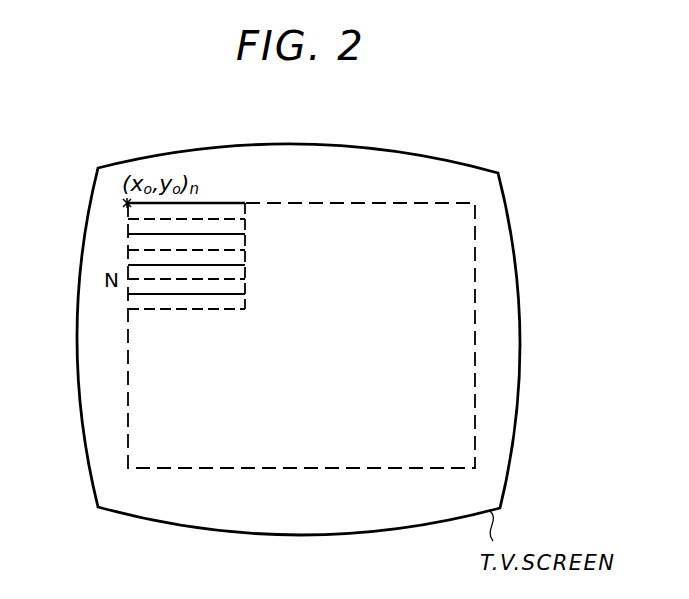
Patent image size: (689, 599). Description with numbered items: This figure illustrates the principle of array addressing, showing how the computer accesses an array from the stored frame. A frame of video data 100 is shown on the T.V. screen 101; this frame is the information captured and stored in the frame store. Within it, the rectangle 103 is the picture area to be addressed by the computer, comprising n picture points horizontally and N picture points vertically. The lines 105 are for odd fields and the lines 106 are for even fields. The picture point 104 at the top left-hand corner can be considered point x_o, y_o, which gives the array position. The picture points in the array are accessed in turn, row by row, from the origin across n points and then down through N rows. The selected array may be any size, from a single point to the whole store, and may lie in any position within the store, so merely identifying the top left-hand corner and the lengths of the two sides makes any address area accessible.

The frame of video data 100 is at (476, 227).
The T.V. screen 101 is at (518, 292).
The rectangle 103 is at (230, 256).
The picture point 104 is at (125, 203).
The lines for odd fields 105 is at (246, 234).
The lines for even fields 106 is at (246, 219).